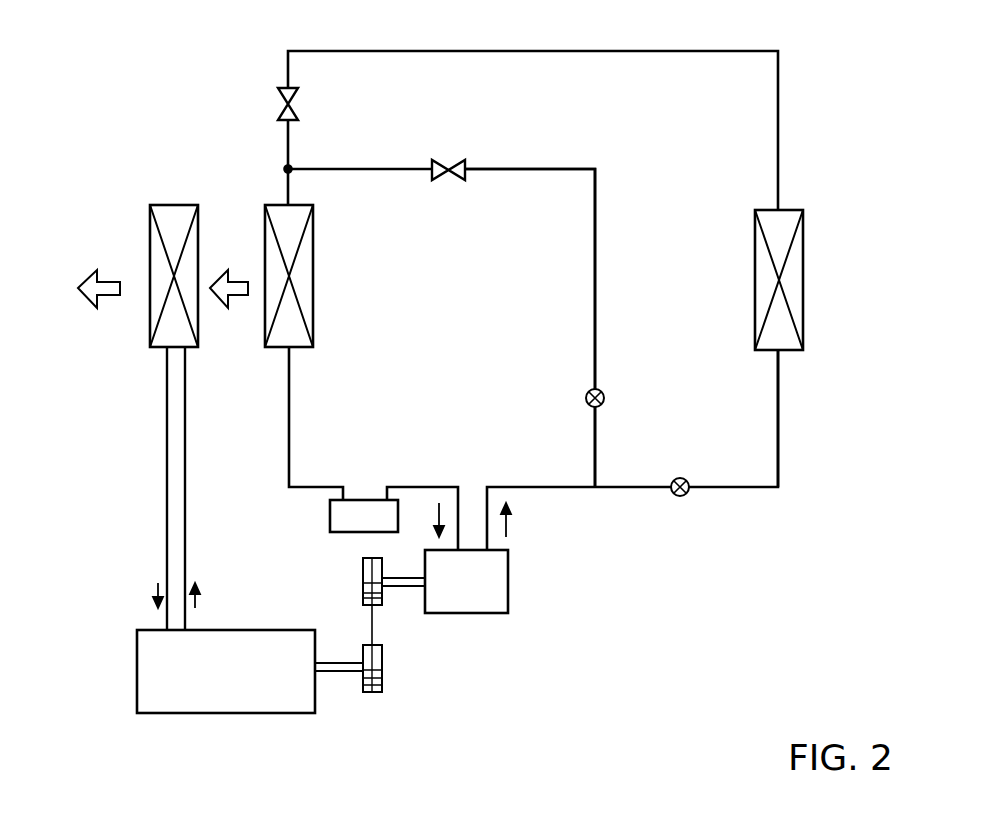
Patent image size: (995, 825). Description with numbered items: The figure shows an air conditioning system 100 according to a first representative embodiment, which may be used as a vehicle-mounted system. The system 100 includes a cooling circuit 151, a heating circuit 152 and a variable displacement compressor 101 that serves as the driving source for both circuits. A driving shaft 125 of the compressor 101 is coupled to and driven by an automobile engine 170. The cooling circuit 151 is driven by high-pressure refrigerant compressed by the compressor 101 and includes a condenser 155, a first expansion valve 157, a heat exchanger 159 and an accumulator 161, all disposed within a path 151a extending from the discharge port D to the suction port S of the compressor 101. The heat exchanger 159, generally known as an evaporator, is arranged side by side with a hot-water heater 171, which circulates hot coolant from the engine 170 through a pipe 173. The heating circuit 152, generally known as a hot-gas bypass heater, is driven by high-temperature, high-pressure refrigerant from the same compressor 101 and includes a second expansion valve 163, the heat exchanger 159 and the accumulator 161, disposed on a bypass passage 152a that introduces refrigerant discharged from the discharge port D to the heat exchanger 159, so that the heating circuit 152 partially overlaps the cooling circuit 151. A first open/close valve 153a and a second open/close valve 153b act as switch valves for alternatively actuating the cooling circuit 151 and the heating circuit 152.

The air conditioning system 100 is at (735, 614).
The variable displacement compressor 101 is at (510, 592).
The driving shaft 125 is at (402, 588).
The cooling circuit 151 is at (780, 404).
The path 151a is at (780, 450).
The heating circuit 152 is at (597, 285).
The bypass passage 152a is at (597, 217).
The first open/close valve 153a is at (683, 497).
The second open/close valve 153b is at (605, 399).
The condenser 155 is at (805, 257).
The first expansion valve 157 is at (277, 92).
The heat exchanger 159 is at (315, 250).
The accumulator 161 is at (364, 514).
The second expansion valve 163 is at (463, 162).
The automobile engine 170 is at (147, 683).
The hot-water heater 171 is at (175, 205).
The pipe 173 is at (167, 468).